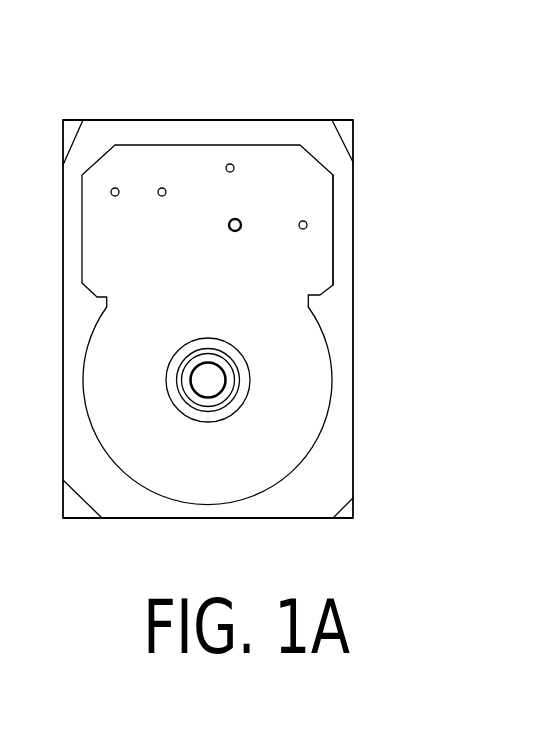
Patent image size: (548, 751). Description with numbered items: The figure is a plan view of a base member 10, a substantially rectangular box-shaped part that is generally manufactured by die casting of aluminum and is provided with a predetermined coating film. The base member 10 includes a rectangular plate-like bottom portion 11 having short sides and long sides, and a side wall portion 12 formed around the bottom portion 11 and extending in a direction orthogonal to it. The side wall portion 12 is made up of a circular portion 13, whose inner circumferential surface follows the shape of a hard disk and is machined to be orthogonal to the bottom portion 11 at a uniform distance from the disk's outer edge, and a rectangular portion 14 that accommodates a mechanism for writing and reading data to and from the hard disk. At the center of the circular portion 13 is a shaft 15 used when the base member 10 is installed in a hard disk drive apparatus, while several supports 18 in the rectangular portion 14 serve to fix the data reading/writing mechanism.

The base member 10 is at (365, 92).
The bottom portion 11 is at (197, 158).
The side wall portion 12 is at (328, 455).
The circular portion 13 is at (326, 381).
The rectangular portion 14 is at (333, 262).
The shaft 15 is at (235, 232).
The supports 18 is at (303, 221).